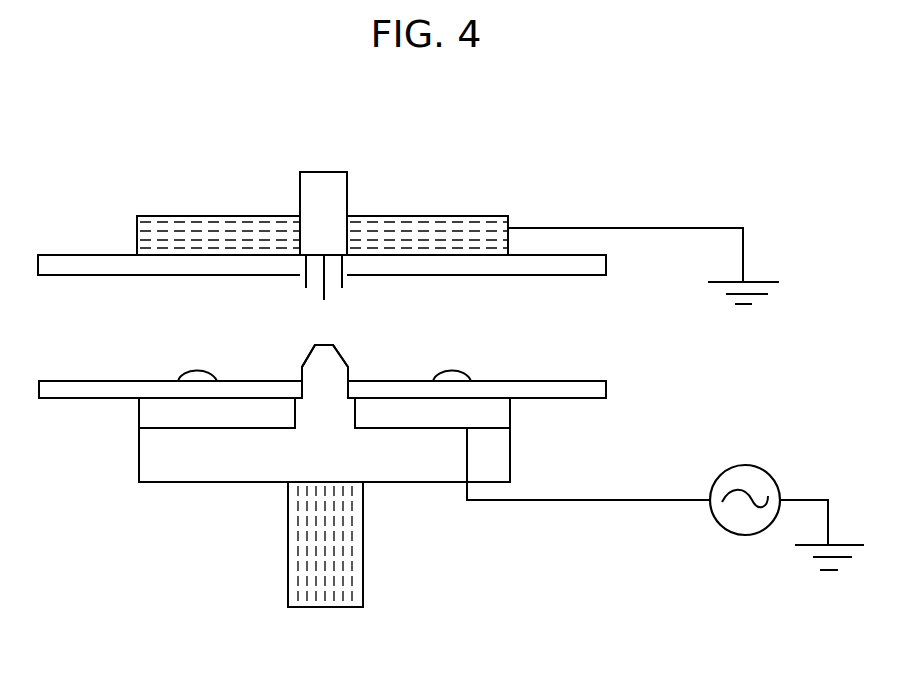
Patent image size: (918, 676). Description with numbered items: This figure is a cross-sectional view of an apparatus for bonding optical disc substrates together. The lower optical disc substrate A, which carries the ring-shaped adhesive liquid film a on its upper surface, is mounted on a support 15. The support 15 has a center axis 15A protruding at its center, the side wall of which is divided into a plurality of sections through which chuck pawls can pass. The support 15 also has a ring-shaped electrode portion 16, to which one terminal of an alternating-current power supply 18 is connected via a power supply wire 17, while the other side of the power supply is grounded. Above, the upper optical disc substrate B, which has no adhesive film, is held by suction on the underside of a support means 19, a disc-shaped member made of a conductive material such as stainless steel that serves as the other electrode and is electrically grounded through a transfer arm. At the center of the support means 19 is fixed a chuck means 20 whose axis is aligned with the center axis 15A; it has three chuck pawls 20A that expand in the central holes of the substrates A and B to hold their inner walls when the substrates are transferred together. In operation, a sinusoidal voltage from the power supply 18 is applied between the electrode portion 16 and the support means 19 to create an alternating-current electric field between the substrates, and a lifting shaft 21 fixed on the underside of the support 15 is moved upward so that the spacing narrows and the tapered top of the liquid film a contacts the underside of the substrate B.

The lower optical disc substrate A is at (64, 399).
The upper optical disc substrate B is at (58, 260).
The adhesive liquid film a is at (190, 373).
The support 15 is at (272, 467).
The center axis 15A is at (345, 361).
The ring-shaped electrode portion 16 is at (143, 413).
The power supply wire 17 is at (588, 503).
The alternating-current power supply 18 is at (768, 472).
The support means 19 is at (457, 221).
The chuck means 20 is at (330, 180).
The chuck pawls 20A is at (344, 282).
The lifting shaft 21 is at (352, 574).